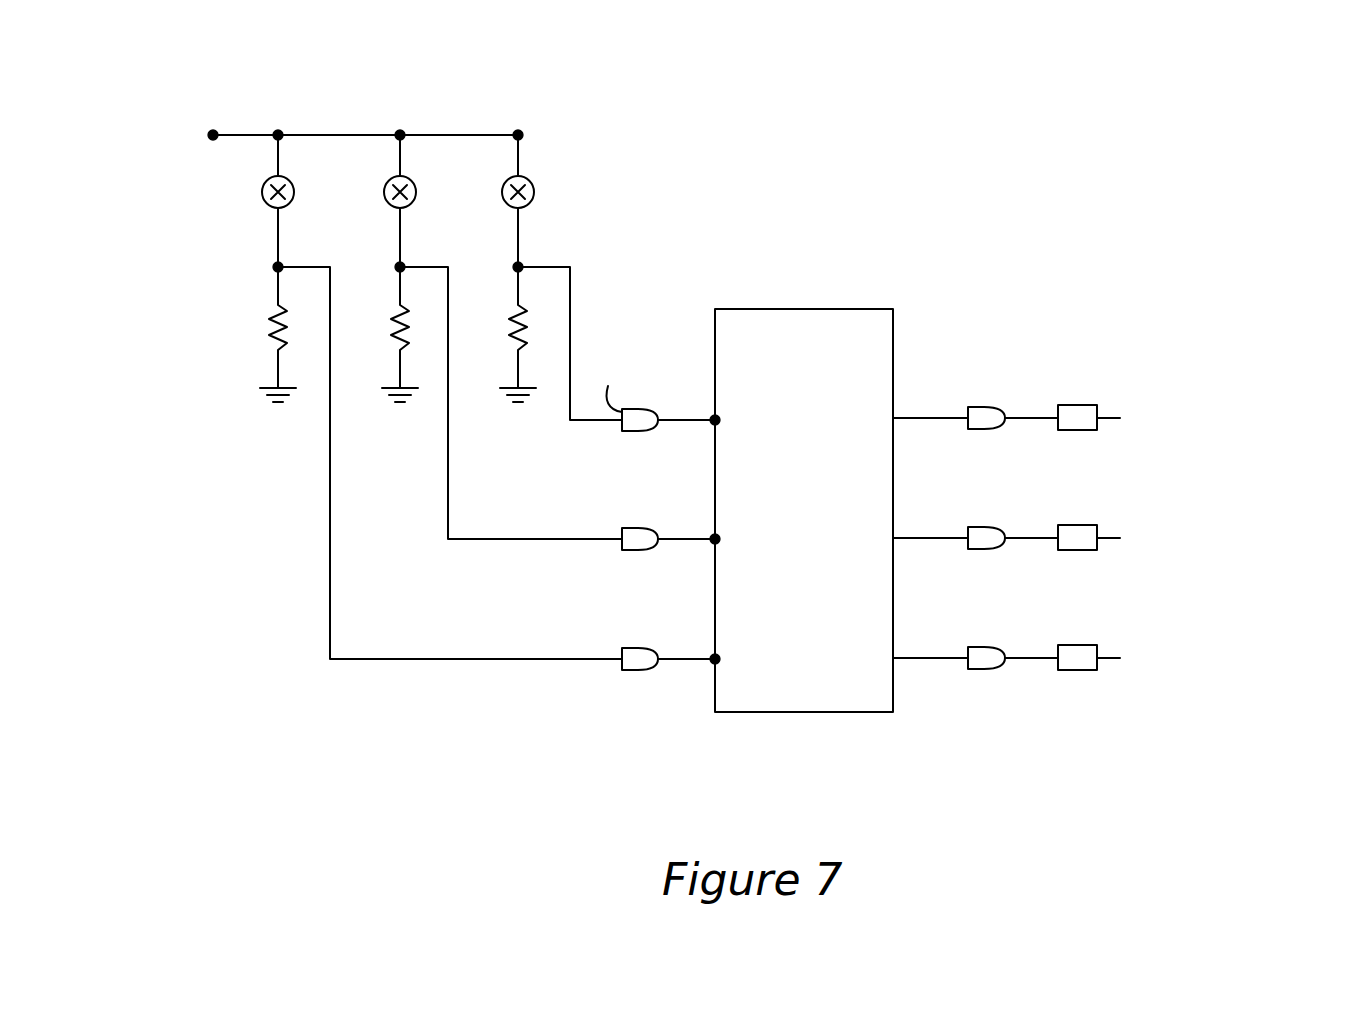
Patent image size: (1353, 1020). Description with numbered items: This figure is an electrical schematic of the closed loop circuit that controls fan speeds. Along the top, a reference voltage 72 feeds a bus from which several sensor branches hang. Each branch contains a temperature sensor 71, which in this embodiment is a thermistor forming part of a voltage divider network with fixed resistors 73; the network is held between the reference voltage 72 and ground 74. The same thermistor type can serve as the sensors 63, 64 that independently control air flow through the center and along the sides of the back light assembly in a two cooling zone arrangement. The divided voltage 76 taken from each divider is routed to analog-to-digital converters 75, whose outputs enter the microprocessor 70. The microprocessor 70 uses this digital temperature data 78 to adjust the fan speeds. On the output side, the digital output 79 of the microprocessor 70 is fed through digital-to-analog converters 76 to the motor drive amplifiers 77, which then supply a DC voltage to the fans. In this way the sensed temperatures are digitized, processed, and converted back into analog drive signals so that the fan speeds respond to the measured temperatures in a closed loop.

The microprocessor 70 is at (835, 686).
The temperature sensor 71 is at (526, 184).
The reference voltage 72 is at (214, 132).
The fixed resistors 73 is at (276, 312).
The ground 74 is at (265, 389).
The analog-to-digital converters 75 is at (622, 545).
The divided voltage 76 is at (568, 263).
The motor drive amplifiers 77 is at (1069, 525).
The digital temperature data 78 is at (698, 380).
The digital output 79 is at (912, 418).
The sensor 63 is at (404, 181).
The sensor 64 is at (283, 181).